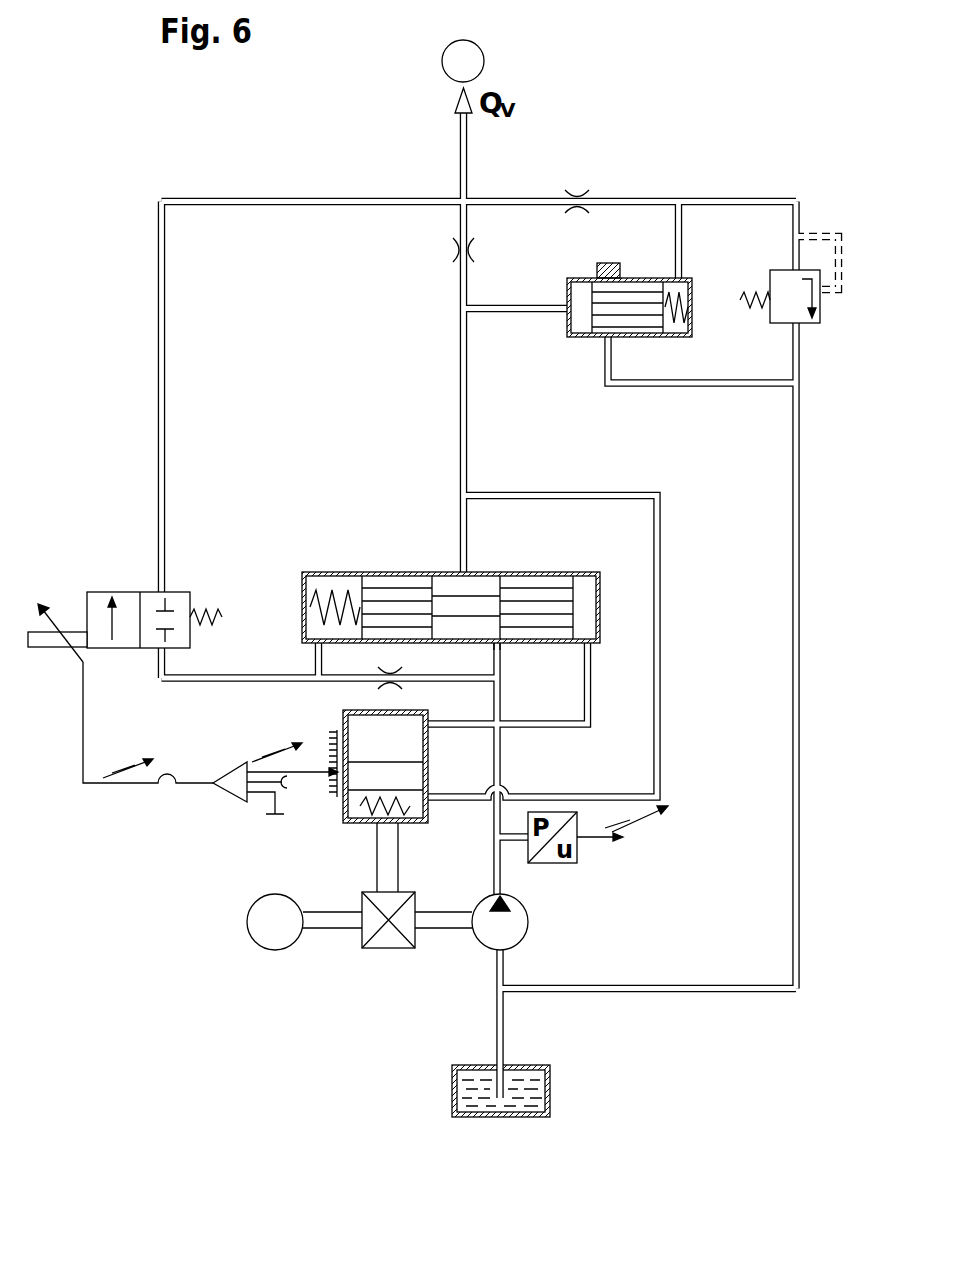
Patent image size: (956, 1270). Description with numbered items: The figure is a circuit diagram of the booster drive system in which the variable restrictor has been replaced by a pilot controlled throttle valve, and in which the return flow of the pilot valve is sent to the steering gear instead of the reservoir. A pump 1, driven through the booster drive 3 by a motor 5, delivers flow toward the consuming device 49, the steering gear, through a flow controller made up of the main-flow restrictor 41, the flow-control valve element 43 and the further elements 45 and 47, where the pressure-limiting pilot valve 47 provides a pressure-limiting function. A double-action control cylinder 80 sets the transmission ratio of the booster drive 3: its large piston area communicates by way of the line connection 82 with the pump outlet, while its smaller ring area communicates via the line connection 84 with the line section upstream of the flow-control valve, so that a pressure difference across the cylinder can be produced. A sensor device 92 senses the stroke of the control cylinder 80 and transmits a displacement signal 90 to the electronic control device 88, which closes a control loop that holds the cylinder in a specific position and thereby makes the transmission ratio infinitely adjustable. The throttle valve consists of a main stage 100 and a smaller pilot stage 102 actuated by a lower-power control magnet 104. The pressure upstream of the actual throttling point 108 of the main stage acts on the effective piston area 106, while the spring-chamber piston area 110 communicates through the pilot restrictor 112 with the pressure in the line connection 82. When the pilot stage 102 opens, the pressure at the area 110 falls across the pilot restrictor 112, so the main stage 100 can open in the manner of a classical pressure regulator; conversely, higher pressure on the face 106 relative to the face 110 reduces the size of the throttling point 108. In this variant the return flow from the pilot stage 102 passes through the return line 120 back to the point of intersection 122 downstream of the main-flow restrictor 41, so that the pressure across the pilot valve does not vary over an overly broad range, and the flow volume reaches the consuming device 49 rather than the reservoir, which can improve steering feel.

The pump 1 is at (530, 920).
The booster drive 3 is at (380, 950).
The electric motor 5 is at (247, 922).
The main-flow restrictor 41 is at (455, 250).
The flow-control valve element 43 is at (631, 278).
The flow controller element 45 is at (579, 198).
The pressure-limiting pilot valve 47 is at (778, 284).
The consuming device 49 is at (463, 61).
The control cylinder 80 is at (386, 801).
The line connection 82 is at (465, 728).
The line connection 84 is at (660, 624).
The electronic control device 88 is at (238, 768).
The displacement signal 90 is at (309, 768).
The sensor device 92 is at (337, 800).
The main stage 100 is at (451, 594).
The pilot stage 102 is at (97, 592).
The control magnet 104 is at (43, 648).
The effective piston area 106 is at (585, 600).
The throttling point 108 is at (503, 648).
The spring-chamber piston area 110 is at (346, 586).
The pilot restrictor 112 is at (405, 688).
The return line 120 is at (158, 395).
The point of intersection 122 is at (458, 200).